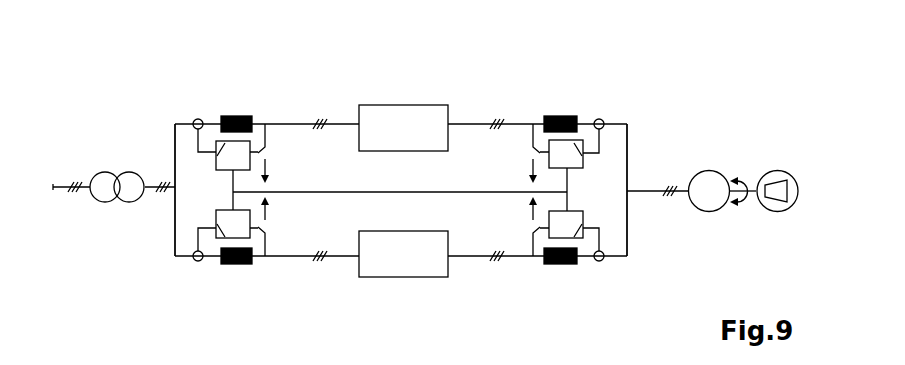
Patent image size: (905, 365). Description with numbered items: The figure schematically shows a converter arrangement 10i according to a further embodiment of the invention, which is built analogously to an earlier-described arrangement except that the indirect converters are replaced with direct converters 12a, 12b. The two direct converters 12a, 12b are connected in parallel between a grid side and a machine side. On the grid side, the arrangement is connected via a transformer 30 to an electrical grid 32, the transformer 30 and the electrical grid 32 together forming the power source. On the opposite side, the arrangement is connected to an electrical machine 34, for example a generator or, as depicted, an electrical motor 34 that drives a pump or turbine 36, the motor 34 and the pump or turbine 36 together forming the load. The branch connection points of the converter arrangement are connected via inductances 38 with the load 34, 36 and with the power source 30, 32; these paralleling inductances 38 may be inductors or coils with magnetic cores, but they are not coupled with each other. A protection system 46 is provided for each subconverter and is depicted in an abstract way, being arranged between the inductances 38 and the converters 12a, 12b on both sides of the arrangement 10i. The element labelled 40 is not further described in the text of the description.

The converter arrangement 10i is at (659, 71).
The direct converter 12a is at (388, 105).
The direct converter 12b is at (388, 277).
The transformer 30 is at (116, 201).
The electrical grid 32 is at (53, 190).
The electrical machine 34 is at (710, 212).
The pump or turbine 36 is at (777, 212).
The inductance 38 is at (237, 116).
The power converter 40 is at (175, 188).
The protection system 46 is at (217, 143).